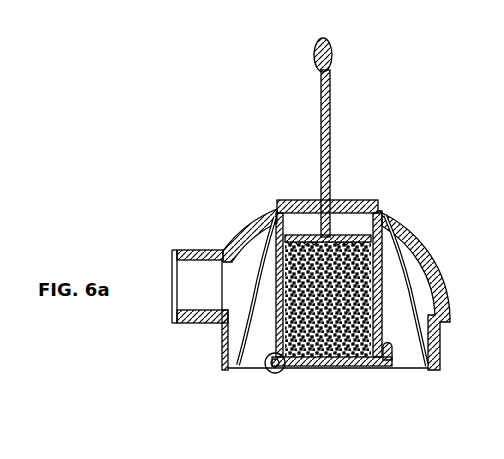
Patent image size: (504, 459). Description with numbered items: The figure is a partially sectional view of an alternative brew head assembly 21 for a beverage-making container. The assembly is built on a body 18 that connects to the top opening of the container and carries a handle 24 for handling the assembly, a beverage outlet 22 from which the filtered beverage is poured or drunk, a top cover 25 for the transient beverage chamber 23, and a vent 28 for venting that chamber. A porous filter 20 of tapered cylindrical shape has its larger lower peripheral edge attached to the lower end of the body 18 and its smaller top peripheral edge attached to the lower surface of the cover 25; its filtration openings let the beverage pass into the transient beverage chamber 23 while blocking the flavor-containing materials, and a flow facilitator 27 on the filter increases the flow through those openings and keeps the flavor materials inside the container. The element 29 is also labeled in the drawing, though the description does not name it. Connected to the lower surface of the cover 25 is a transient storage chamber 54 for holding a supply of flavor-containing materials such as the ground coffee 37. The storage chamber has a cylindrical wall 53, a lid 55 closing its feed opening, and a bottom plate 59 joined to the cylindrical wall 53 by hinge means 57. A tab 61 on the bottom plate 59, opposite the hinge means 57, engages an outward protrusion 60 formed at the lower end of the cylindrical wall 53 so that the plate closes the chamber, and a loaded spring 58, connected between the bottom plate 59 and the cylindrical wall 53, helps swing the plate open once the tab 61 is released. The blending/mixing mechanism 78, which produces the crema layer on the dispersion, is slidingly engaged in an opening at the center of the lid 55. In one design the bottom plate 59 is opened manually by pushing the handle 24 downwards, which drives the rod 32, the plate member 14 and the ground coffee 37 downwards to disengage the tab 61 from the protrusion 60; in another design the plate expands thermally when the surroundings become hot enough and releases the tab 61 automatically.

The plate member 14 is at (300, 233).
The body 18 is at (222, 350).
The porous filter 20 is at (408, 303).
The brew head assembly 21 is at (188, 229).
The beverage outlet 22 is at (172, 293).
The transient beverage chamber 23 is at (243, 260).
The handle 24 is at (336, 63).
The top cover 25 is at (247, 227).
The flow facilitator 27 is at (417, 251).
The vent 28 is at (418, 240).
The liner wall 29 is at (403, 265).
The rod 32 is at (331, 109).
The ground coffee 37 is at (385, 328).
The cylindrical wall 53 is at (278, 323).
The transient storage chamber 54 is at (318, 382).
The lid 55 is at (347, 200).
The hinge means 57 is at (265, 373).
The spring 58 is at (288, 377).
The bottom plate 59 is at (342, 367).
The outward protrusion 60 is at (392, 365).
The tab 61 is at (390, 352).
The blending/mixing mechanism 78 is at (303, 122).